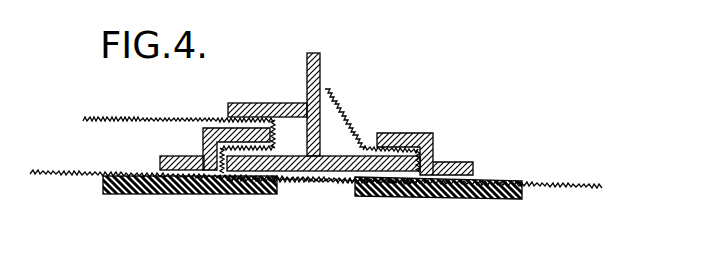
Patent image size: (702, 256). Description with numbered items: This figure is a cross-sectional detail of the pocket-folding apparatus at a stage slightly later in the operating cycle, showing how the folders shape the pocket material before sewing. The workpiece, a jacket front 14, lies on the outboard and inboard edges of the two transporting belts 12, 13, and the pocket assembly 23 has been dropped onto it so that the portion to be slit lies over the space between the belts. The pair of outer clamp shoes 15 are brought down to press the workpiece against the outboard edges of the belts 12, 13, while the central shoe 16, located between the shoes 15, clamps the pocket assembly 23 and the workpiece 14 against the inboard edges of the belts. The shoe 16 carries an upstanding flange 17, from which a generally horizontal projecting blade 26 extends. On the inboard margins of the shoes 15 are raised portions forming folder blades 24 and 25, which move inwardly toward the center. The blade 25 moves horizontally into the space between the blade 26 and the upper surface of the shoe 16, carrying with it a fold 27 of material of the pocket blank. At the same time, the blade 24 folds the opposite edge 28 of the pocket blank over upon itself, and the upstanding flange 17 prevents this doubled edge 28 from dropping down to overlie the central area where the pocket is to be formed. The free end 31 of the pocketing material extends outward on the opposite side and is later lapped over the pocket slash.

The belt 12 is at (447, 199).
The belt 13 is at (192, 195).
The jacket front 14 is at (549, 182).
The clamp shoe 15 is at (159, 158).
The shoe 16 is at (323, 73).
The upstanding flange 17 is at (306, 70).
The pocket assembly 23 is at (146, 116).
The folder blade 24 is at (412, 133).
The folder blade 25 is at (221, 127).
The projecting blade 26 is at (262, 103).
The fold 27 is at (275, 146).
The edge of pocket blank 28 is at (329, 90).
The free end of pocketing material 31 is at (84, 117).